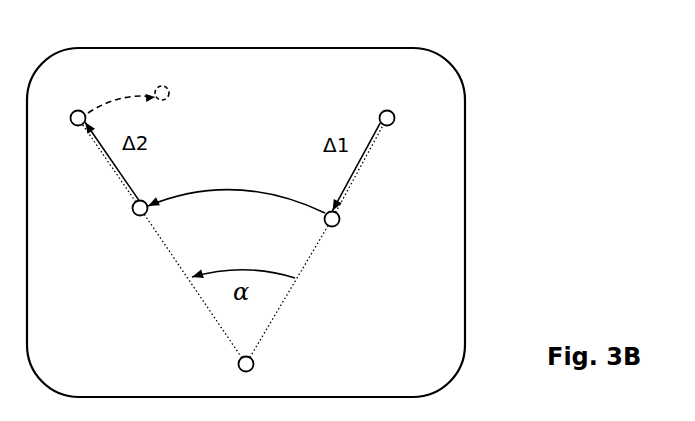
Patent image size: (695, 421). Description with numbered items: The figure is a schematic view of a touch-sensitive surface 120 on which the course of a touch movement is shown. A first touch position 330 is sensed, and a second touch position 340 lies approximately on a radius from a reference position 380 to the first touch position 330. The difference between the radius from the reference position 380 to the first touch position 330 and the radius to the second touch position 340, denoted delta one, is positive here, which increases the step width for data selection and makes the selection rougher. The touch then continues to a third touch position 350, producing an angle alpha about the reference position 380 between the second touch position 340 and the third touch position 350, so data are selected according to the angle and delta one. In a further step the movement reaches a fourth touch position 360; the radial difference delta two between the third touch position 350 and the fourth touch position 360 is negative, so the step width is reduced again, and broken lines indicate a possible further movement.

The touch-sensitive surface 120 is at (478, 75).
The first touch position 330 is at (407, 106).
The second touch position 340 is at (358, 225).
The third touch position 350 is at (115, 214).
The fourth touch position 360 is at (67, 102).
The reference position 380 is at (271, 373).